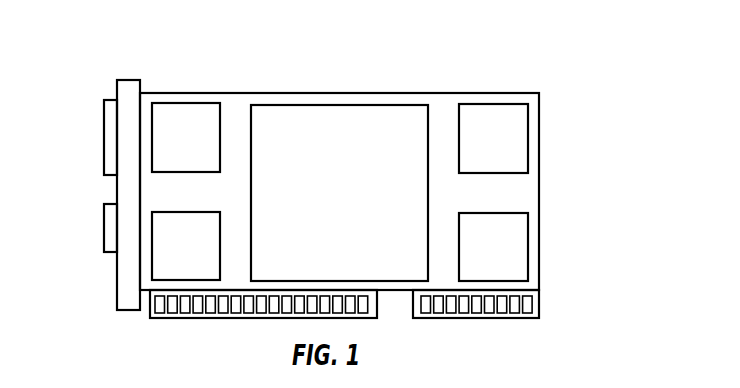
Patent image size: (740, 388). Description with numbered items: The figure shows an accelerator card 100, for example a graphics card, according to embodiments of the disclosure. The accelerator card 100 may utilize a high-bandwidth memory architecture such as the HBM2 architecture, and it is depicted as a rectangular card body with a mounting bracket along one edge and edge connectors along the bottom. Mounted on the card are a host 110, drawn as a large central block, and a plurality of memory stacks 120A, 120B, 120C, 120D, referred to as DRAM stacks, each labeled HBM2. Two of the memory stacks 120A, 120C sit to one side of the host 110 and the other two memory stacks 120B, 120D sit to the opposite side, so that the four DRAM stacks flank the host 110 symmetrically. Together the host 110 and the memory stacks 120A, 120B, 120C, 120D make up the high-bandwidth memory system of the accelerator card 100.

The accelerator card 100 is at (547, 38).
The host 110 is at (341, 104).
The memory stack 120A is at (152, 137).
The memory stack 120B is at (528, 138).
The memory stack 120C is at (152, 246).
The memory stack 120D is at (528, 243).